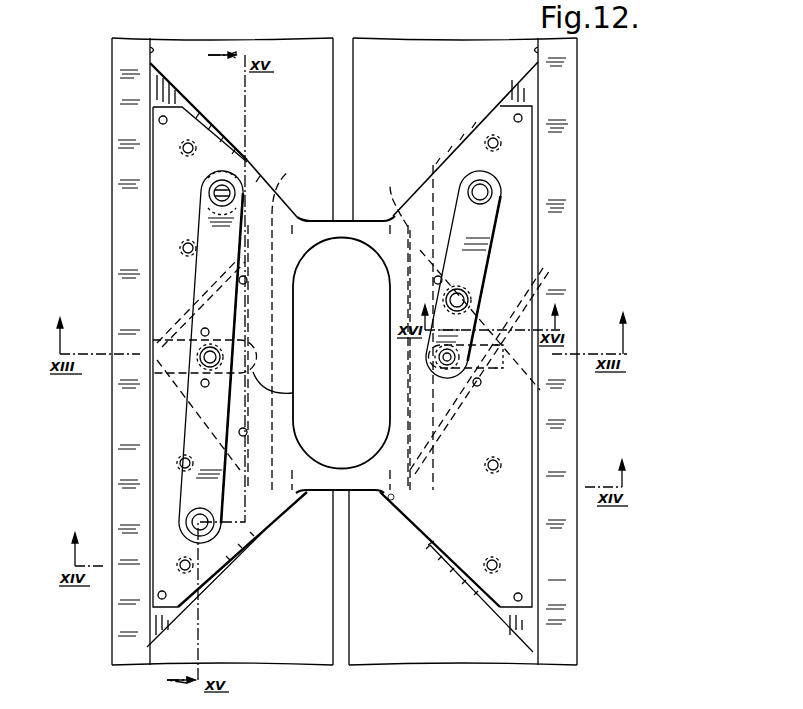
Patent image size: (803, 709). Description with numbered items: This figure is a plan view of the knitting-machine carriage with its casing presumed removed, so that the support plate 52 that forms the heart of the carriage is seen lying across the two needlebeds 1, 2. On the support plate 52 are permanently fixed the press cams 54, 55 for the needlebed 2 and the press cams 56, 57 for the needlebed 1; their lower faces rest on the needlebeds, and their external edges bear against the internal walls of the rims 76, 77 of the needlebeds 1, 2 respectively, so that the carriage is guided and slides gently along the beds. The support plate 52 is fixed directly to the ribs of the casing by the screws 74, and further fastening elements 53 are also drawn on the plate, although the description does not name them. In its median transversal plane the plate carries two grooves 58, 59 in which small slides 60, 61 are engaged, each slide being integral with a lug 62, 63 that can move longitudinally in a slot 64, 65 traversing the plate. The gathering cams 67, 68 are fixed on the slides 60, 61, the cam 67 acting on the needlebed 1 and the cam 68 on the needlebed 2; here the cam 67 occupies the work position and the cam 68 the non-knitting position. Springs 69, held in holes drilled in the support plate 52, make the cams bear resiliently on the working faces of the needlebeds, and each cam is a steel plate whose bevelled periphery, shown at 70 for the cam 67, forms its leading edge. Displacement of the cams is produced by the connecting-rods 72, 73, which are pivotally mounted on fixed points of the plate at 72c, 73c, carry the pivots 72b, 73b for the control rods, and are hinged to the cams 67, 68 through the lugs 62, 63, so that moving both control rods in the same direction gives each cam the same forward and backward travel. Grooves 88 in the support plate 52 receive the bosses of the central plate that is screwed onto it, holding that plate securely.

The needlebed 1 is at (303, 52).
The needlebed 2 is at (411, 52).
The support plate 52 is at (227, 147).
The screw 53 is at (183, 148).
The press cam 54 is at (530, 637).
The press cam 55 is at (535, 93).
The press cam 56 is at (155, 627).
The press cam 57 is at (152, 90).
The groove 58 is at (428, 380).
The groove 59 is at (258, 342).
The slide 60 is at (420, 356).
The slide 61 is at (258, 364).
The lug 62 is at (443, 363).
The lug 63 is at (214, 350).
The slot 64 is at (494, 398).
The slot 65 is at (285, 388).
The gathering cam 67 is at (428, 254).
The gathering cam 68 is at (288, 216).
The spring 69 is at (200, 330).
The bevelled edge 70 is at (518, 308).
The connecting-rod 72 is at (497, 213).
The pivot 72b is at (493, 192).
The fixed pivot point 72c is at (466, 306).
The connecting-rod 73 is at (183, 493).
The pivot 73b is at (209, 517).
The fixed pivot point 73c is at (209, 192).
The screw 74 is at (159, 121).
The rim 76 is at (150, 49).
The rim 77 is at (540, 50).
The groove 88 is at (341, 324).